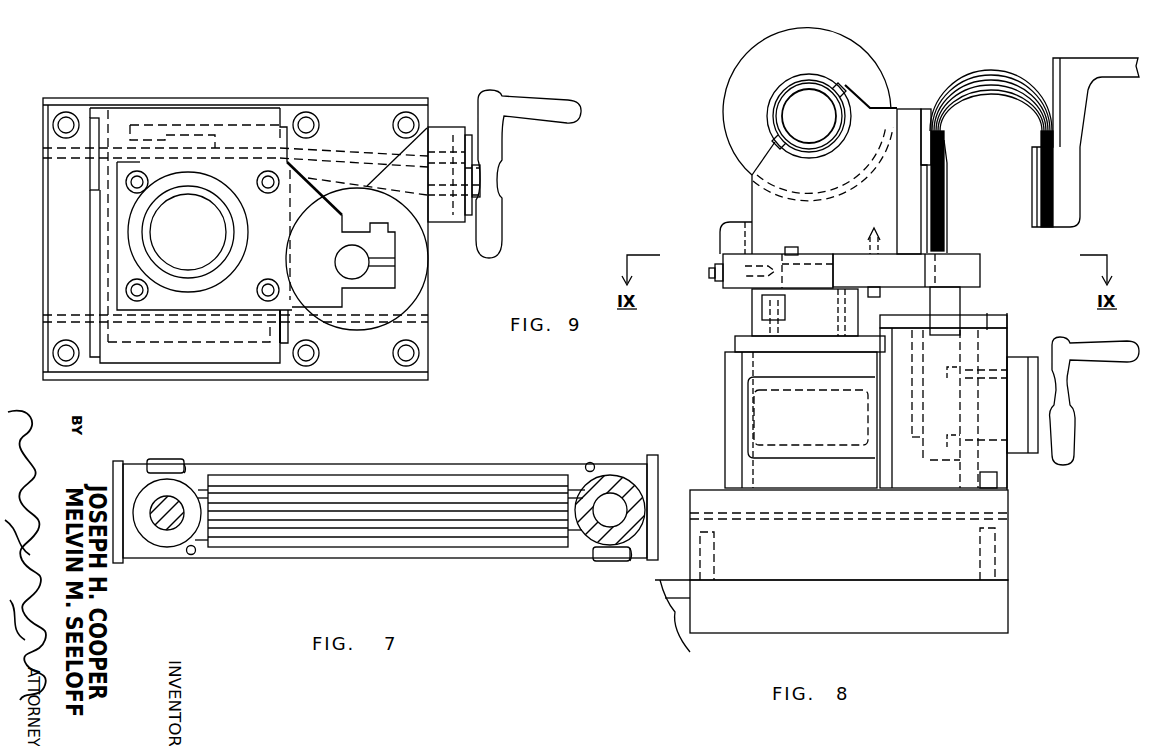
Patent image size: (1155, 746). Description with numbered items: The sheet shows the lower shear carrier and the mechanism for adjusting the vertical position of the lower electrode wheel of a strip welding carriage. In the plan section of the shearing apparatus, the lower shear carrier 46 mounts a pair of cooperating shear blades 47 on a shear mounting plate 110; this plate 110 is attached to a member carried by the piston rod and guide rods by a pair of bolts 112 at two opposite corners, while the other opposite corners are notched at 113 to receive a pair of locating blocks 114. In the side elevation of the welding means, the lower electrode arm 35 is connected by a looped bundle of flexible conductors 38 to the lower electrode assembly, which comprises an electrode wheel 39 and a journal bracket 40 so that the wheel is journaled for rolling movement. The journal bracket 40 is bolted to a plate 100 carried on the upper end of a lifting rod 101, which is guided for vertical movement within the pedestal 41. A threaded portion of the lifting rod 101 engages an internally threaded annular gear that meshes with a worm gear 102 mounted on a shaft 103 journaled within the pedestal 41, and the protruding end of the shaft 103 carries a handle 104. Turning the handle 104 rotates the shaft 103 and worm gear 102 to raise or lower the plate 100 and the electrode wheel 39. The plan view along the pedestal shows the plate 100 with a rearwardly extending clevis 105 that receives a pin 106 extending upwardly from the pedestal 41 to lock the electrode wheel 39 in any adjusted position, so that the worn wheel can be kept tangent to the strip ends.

In FIG. 8, the lower electrode arm 35 is at (1072, 218).
In FIG. 8, the looped bundle of flexible conductors 38 is at (965, 78).
In FIG. 8, the electrode wheel 39 is at (870, 68).
In FIG. 8, the journal bracket 40 is at (762, 212).
In FIG. 9, the pedestal 41 is at (346, 110).
In FIG. 8, the pedestal 41 is at (742, 404).
In FIG. 7, the lower shear carrier 46 is at (357, 473).
In FIG. 7, the shear blades 47 is at (460, 478).
In FIG. 9, the plate 100 is at (235, 178).
In FIG. 8, the plate 100 is at (740, 270).
In FIG. 9, the lifting rod 101 is at (185, 252).
In FIG. 8, the lifting rod 101 is at (780, 289).
In FIG. 9, the worm gear 102 is at (200, 100).
In FIG. 9, the shaft 103 is at (410, 173).
In FIG. 9, the handle 104 is at (490, 238).
In FIG. 8, the handle 104 is at (1065, 452).
In FIG. 9, the clevis 105 is at (385, 250).
In FIG. 8, the clevis 105 is at (968, 250).
In FIG. 9, the pin 106 is at (352, 268).
In FIG. 8, the pin 106 is at (945, 300).
In FIG. 7, the lower shear mounting plate 110 is at (537, 560).
In FIG. 7, the bolts 112 is at (589, 462).
In FIG. 7, the notches 113 is at (186, 467).
In FIG. 7, the locating blocks 114 is at (160, 463).